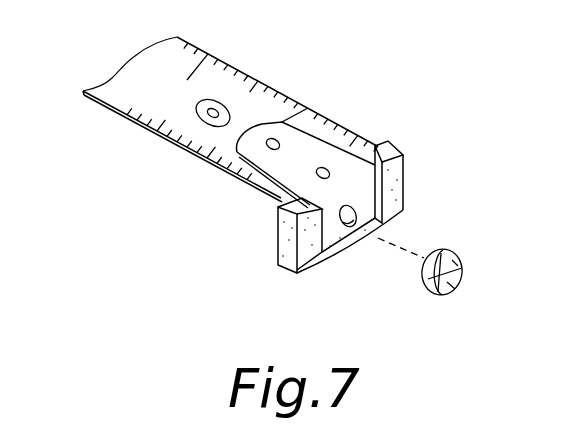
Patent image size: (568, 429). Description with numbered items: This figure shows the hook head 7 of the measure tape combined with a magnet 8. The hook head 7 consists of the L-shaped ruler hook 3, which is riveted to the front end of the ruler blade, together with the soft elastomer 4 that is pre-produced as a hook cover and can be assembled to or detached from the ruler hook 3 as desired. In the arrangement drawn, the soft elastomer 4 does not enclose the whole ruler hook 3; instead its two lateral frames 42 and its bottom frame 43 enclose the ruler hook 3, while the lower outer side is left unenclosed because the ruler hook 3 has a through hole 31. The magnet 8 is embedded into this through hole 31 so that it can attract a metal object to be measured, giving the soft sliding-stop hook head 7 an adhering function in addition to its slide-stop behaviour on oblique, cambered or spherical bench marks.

The hook head 7 is at (416, 82).
The ruler hook 3 is at (295, 147).
The through hole 31 is at (352, 223).
The soft elastomer 4 is at (403, 212).
The lateral frames 42 is at (282, 240).
The bottom frame 43 is at (308, 271).
The magnet 8 is at (460, 285).